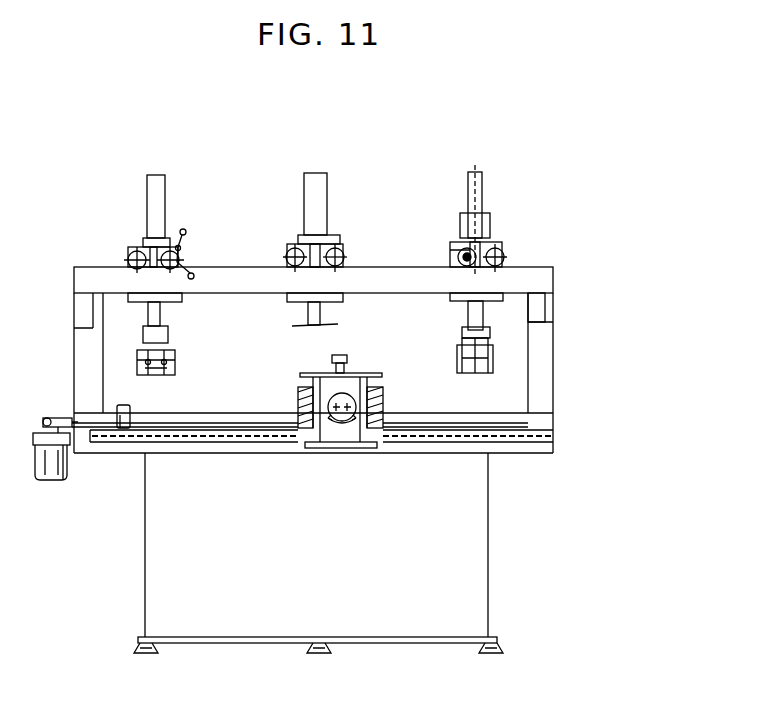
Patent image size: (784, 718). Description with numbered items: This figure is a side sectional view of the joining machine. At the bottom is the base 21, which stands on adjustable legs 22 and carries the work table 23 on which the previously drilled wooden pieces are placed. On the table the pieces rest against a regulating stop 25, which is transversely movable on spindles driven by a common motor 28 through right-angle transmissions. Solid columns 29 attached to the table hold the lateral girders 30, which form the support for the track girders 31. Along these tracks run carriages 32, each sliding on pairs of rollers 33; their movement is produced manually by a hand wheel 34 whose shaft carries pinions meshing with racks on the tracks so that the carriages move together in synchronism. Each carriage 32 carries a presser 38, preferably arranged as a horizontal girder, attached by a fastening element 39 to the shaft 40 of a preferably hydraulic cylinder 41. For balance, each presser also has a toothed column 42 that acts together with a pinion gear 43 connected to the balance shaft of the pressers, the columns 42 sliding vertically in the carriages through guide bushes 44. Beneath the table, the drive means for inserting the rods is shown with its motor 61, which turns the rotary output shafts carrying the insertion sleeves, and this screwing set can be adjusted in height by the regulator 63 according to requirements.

The base 21 is at (488, 528).
The adjustable legs 22 is at (492, 655).
The work table 23 is at (540, 443).
The regulating stop 25 is at (120, 430).
The motor 28 is at (63, 483).
The solid columns 29 is at (547, 360).
The lateral girders 30 is at (545, 303).
The track girders 31 is at (112, 278).
The carriages 32 is at (317, 255).
The rollers 33 is at (343, 257).
The hand wheel 34 is at (185, 230).
The presser 38 is at (478, 372).
The fastening element 39 is at (487, 345).
The shaft 40 is at (467, 315).
The hydraulic cylinder 41 is at (318, 185).
The toothed column 42 is at (480, 205).
The pinion gear 43 is at (460, 257).
The guide bushes 44 is at (485, 233).
The motor 61 is at (340, 420).
The regulator 63 is at (330, 358).